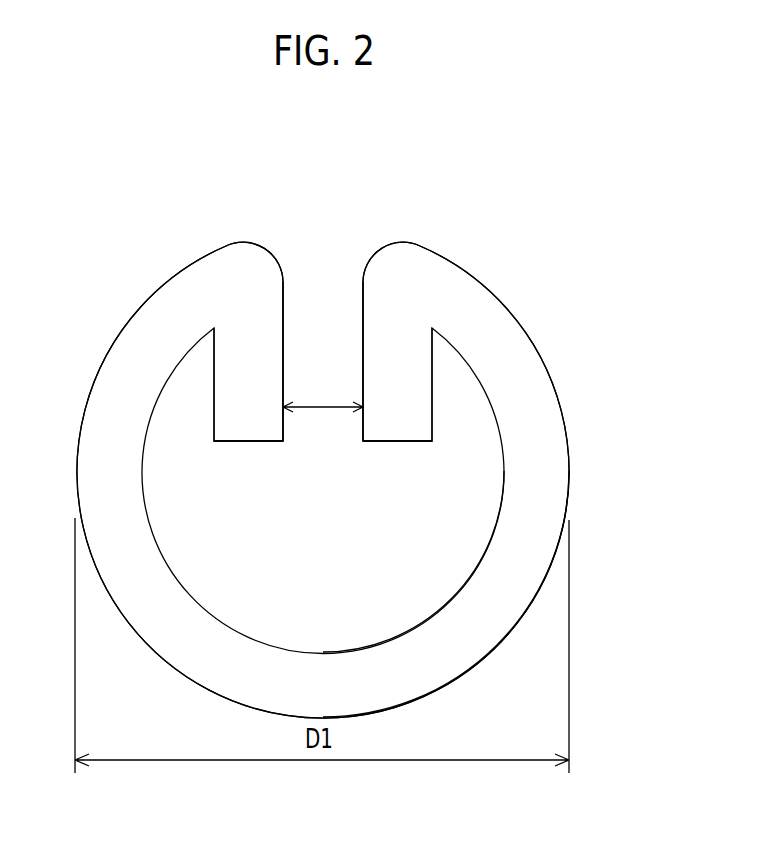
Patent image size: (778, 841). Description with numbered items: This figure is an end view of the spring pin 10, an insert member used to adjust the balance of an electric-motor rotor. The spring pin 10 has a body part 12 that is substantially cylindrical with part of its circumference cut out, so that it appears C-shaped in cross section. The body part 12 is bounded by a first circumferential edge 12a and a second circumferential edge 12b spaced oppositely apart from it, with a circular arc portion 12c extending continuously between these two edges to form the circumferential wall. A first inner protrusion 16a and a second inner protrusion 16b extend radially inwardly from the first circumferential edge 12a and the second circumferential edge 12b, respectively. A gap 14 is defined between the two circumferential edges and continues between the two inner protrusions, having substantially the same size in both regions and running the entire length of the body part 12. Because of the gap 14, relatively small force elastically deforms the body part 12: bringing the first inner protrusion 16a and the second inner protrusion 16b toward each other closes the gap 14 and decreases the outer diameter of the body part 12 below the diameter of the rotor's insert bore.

The spring pin 10 is at (582, 348).
The body part 12 is at (93, 370).
The first circumferential edge 12a is at (242, 275).
The second circumferential edge 12b is at (418, 290).
The circular arc portion 12c is at (537, 513).
The gap 14 is at (337, 323).
The first inner protrusion 16a is at (257, 422).
The second inner protrusion 16b is at (398, 422).